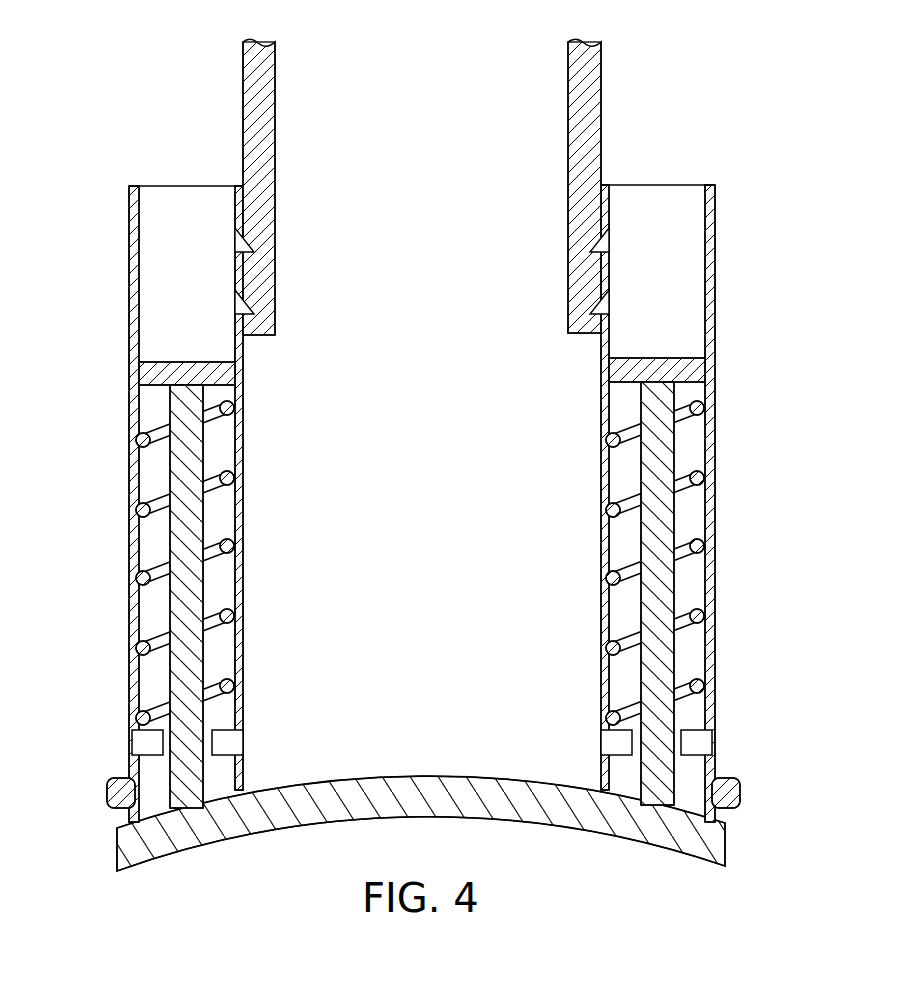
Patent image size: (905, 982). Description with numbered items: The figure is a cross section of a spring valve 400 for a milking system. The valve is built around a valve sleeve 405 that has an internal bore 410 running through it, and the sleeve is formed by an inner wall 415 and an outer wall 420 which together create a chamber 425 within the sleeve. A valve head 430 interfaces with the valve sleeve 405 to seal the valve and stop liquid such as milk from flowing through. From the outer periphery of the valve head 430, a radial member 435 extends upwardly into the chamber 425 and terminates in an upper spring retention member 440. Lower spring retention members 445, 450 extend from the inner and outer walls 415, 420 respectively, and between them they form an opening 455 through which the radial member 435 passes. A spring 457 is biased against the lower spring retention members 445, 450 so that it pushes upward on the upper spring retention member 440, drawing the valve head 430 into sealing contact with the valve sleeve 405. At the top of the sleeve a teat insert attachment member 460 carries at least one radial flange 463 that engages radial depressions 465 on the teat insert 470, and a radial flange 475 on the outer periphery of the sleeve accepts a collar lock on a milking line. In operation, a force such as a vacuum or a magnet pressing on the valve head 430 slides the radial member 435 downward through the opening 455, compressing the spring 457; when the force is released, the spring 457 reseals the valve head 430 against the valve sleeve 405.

The spring valve 400 is at (103, 56).
The valve sleeve 405 is at (639, 503).
The internal bore 410 is at (408, 322).
The inner wall 415 is at (247, 432).
The outer wall 420 is at (130, 424).
The chamber 425 is at (228, 462).
The valve head 430 is at (476, 805).
The radial member 435 is at (186, 541).
The upper spring retention member 440 is at (150, 380).
The lower spring retention member 445 is at (230, 744).
The lower spring retention member 450 is at (148, 745).
The opening 455 is at (167, 748).
The spring 457 is at (158, 492).
The teat insert attachment member 460 is at (185, 504).
The radial flange 463 is at (586, 246).
The radial depressions 465 is at (590, 242).
The teat insert 470 is at (455, 187).
The radial flange 475 is at (118, 798).